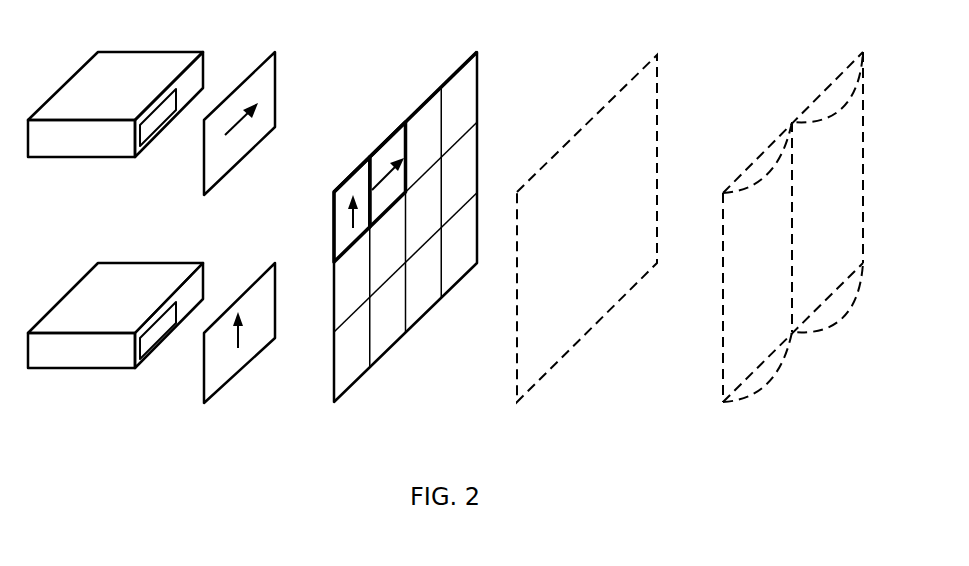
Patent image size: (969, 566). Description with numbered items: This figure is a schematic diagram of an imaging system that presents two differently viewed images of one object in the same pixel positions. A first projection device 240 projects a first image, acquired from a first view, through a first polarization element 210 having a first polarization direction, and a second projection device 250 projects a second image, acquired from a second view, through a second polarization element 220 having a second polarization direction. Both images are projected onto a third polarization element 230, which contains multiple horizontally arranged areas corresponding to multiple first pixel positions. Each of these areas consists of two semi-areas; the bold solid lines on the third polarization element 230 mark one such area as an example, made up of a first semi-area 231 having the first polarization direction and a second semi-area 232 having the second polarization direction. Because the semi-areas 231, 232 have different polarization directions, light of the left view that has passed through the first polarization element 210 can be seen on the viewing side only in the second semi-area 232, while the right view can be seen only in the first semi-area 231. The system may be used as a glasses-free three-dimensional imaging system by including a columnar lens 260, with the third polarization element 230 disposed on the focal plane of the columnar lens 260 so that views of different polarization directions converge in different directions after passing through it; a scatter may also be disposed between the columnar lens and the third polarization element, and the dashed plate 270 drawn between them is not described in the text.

The first polarization element 210 is at (275, 72).
The second polarization element 220 is at (275, 285).
The third polarization element 230 is at (413, 218).
The first semi-area 231 is at (388, 168).
The second semi-area 232 is at (350, 190).
The first projection device 240 is at (175, 50).
The second projection device 250 is at (88, 368).
The columnar lens 260 is at (863, 80).
The optical plate 270 is at (658, 105).